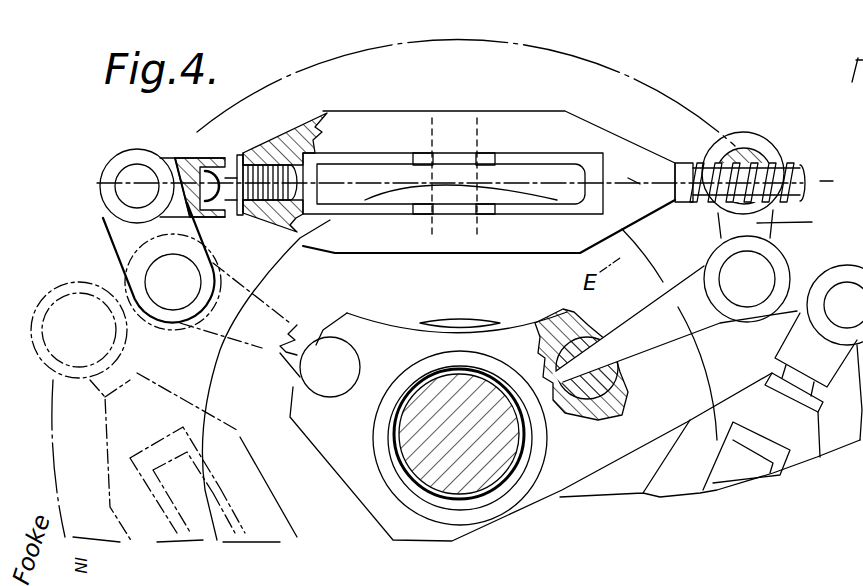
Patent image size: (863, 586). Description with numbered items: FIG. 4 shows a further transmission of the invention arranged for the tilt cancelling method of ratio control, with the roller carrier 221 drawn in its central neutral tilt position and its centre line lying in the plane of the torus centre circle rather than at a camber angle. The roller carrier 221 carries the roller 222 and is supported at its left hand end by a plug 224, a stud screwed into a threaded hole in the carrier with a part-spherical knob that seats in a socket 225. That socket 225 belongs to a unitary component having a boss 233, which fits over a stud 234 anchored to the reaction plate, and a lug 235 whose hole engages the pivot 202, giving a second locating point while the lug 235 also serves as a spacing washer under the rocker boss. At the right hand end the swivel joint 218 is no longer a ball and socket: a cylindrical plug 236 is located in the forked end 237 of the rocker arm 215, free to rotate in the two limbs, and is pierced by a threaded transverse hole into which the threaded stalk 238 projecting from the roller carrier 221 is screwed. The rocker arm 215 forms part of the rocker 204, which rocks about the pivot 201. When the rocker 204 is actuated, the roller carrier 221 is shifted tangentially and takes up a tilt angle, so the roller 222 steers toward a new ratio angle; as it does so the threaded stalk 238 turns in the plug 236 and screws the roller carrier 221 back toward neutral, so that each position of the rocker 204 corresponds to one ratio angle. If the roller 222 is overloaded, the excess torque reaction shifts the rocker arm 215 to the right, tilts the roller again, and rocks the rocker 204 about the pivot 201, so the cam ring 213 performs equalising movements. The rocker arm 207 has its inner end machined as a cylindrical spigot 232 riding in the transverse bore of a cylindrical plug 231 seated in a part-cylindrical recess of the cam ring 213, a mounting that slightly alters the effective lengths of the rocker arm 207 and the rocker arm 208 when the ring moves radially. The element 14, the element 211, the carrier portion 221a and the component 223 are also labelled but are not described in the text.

The shaft hub 14 is at (416, 430).
The pivot 201 is at (748, 295).
The pivot 202 is at (173, 293).
The rocker 204 is at (688, 298).
The rocker arm 207 is at (666, 343).
The rocker arm 208 is at (293, 337).
The body surface 211 is at (300, 373).
The cam ring 213 is at (370, 476).
The rocker arm 215 is at (785, 207).
The swivel joint 218 is at (760, 124).
The roller carrier 221 is at (574, 131).
The inner surface of body 221a is at (628, 178).
The roller 222 is at (525, 170).
The cross pin 223 is at (450, 130).
The plug 224 is at (212, 175).
The socket 225 is at (200, 157).
The cylindrical plug 231 is at (610, 378).
The cylindrical spigot 232 is at (593, 367).
The boss 233 is at (128, 211).
The stud 234 is at (130, 176).
The lug 235 is at (128, 237).
The cylindrical plug 236 is at (722, 138).
The forked end 237 is at (737, 140).
The threaded stalk 238 is at (770, 165).